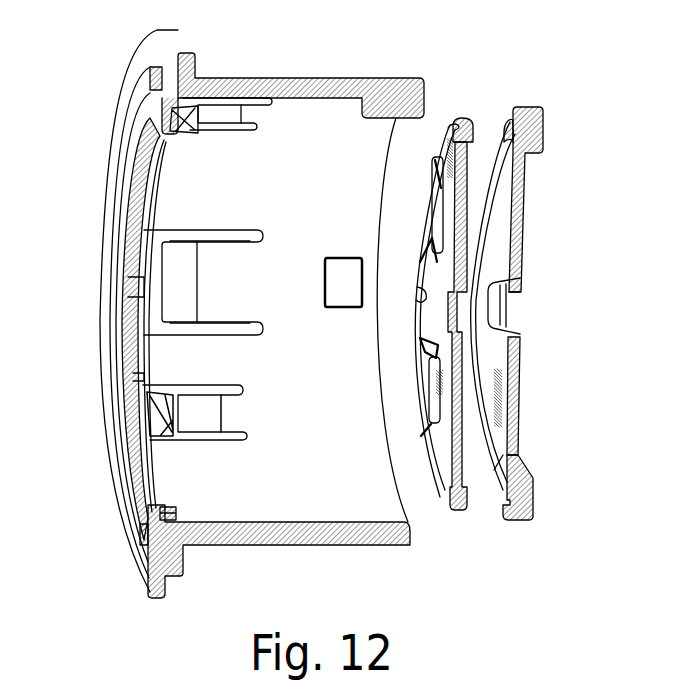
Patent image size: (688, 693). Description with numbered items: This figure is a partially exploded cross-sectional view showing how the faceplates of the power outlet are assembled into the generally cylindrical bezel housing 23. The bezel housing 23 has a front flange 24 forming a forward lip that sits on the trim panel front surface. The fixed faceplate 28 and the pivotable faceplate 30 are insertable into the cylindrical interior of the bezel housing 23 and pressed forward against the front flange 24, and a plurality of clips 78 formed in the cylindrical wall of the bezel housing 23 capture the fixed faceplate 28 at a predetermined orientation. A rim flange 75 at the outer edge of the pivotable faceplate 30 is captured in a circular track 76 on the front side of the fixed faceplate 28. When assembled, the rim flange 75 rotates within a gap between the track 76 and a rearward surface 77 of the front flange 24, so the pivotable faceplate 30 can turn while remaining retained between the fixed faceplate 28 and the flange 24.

The bezel housing 23 is at (331, 78).
The front flange 24 is at (147, 55).
The fixed faceplate 28 is at (542, 122).
The pivotable faceplate 30 is at (443, 496).
The rim flange 75 is at (458, 503).
The circular track 76 is at (509, 127).
The rearward surface 77 is at (178, 516).
The clips 78 is at (167, 137).